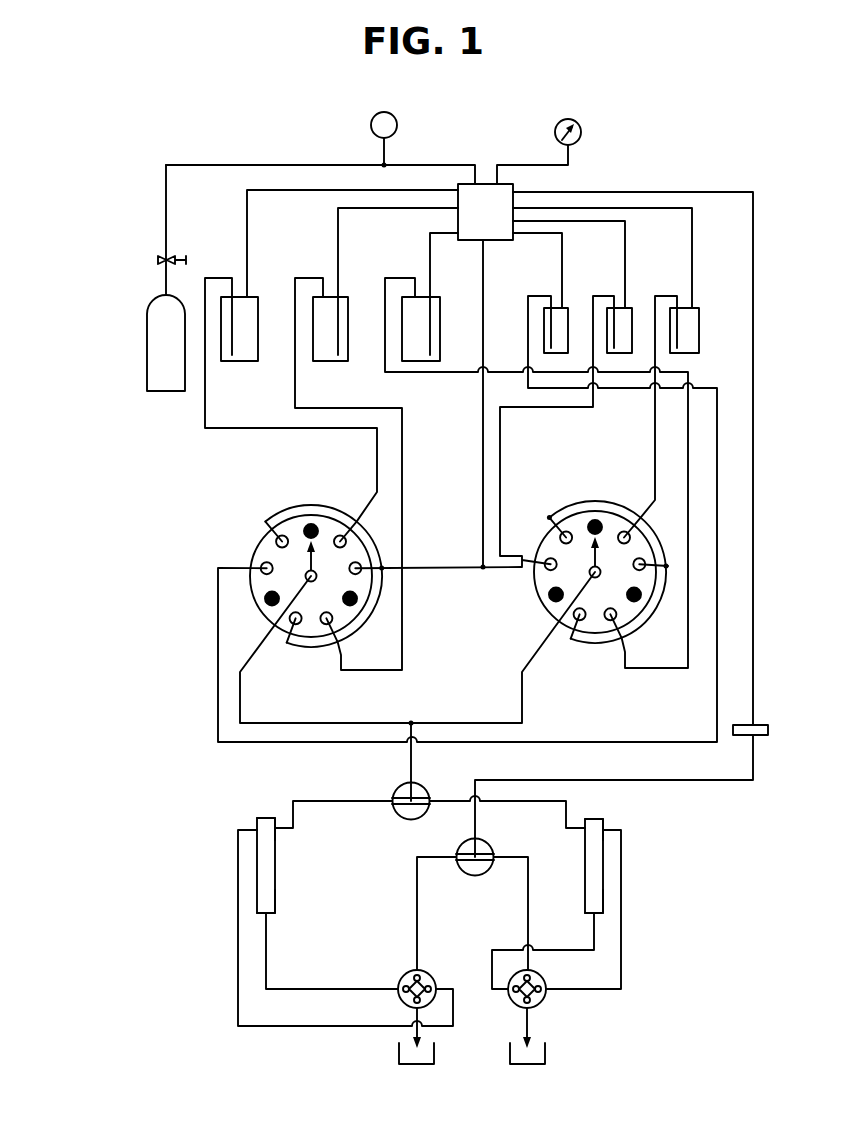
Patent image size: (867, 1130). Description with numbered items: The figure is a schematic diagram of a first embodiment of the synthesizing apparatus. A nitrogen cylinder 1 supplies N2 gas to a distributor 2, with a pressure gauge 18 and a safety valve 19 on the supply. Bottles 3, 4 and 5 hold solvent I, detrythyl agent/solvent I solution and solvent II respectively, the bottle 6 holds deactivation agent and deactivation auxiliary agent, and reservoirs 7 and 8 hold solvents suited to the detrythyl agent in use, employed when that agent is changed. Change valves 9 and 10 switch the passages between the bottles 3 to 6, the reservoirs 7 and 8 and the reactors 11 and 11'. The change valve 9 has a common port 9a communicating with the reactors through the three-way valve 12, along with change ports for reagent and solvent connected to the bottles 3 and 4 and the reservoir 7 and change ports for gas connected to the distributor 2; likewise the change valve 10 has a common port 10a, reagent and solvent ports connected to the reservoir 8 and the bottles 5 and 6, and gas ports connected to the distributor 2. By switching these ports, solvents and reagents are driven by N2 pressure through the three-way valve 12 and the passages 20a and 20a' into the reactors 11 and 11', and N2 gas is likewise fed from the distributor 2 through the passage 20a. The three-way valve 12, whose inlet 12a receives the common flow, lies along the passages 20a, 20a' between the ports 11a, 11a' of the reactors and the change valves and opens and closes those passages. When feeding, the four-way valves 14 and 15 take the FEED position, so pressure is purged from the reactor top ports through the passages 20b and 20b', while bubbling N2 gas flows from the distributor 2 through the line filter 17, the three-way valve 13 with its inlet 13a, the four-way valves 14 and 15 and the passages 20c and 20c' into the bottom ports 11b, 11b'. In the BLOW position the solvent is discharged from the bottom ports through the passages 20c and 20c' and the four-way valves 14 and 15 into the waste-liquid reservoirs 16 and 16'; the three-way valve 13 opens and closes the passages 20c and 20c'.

The nitrogen cylinder 1 is at (151, 323).
The distributor 2 is at (487, 188).
The bottle 3 is at (245, 362).
The bottle 4 is at (340, 362).
The bottle 5 is at (440, 342).
The bottle 6 is at (632, 313).
The reservoir 7 is at (566, 307).
The reservoir 8 is at (698, 328).
The change valve 9 is at (258, 533).
The common port 9a is at (327, 568).
The change valve 10 is at (533, 598).
The common port 10a is at (616, 564).
The reactor 11 is at (304, 865).
The inlet or outlet port 11a is at (291, 840).
The port 11b is at (287, 917).
The reactor 11' is at (574, 866).
The inlet or outlet port 11a' is at (623, 822).
The port 11b' is at (577, 920).
The three-way valve 12 is at (418, 783).
The inlet port of three-way valve 12a is at (386, 774).
The three-way valve 13 is at (466, 877).
The inlet port of three-way valve 13a is at (500, 833).
The four-way valve 14 is at (405, 970).
The four-way valve 15 is at (548, 975).
The waste-liquid reservoir 16 is at (417, 1080).
The waste-liquid reservoir 16' is at (552, 1078).
The line filter 17 is at (738, 737).
The pressure gauge 18 is at (587, 132).
The safety valve 19 is at (371, 125).
The passage 20a is at (333, 796).
The passage 20a' is at (563, 805).
The passage 20b is at (345, 957).
The passage 20b' is at (626, 909).
The passage 20c is at (332, 951).
The passage 20c' is at (543, 939).